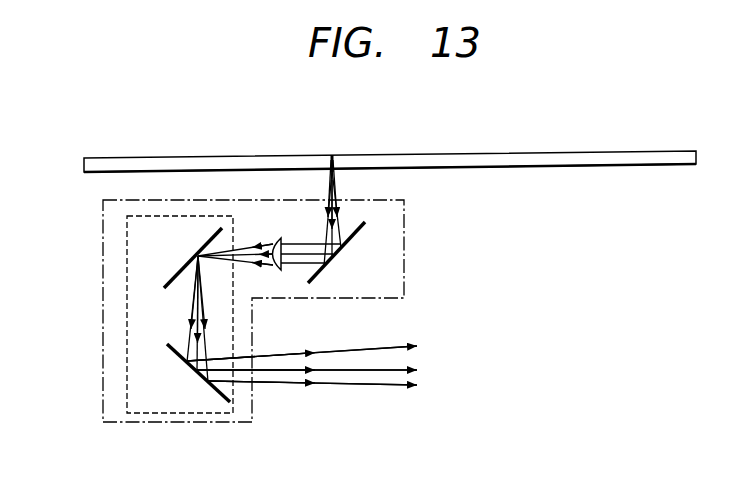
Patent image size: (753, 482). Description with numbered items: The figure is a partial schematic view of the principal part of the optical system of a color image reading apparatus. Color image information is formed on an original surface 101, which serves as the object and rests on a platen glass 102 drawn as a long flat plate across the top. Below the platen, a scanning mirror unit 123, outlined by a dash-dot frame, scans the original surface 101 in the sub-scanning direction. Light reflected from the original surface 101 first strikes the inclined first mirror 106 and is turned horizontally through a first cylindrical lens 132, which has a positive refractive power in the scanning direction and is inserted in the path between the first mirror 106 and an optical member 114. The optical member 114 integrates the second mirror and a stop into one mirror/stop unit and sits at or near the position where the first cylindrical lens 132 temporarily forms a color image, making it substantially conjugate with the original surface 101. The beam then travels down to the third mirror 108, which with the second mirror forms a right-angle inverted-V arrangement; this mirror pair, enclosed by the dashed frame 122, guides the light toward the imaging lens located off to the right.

The original surface 101 is at (217, 157).
The platen glass 102 is at (143, 162).
The first mirror 106 is at (342, 247).
The third mirror 108 is at (202, 380).
The optical member 114 is at (188, 259).
The mirror unit 122 is at (127, 299).
The scanning mirror unit 123 is at (103, 240).
The first cylindrical lens 132 is at (274, 238).